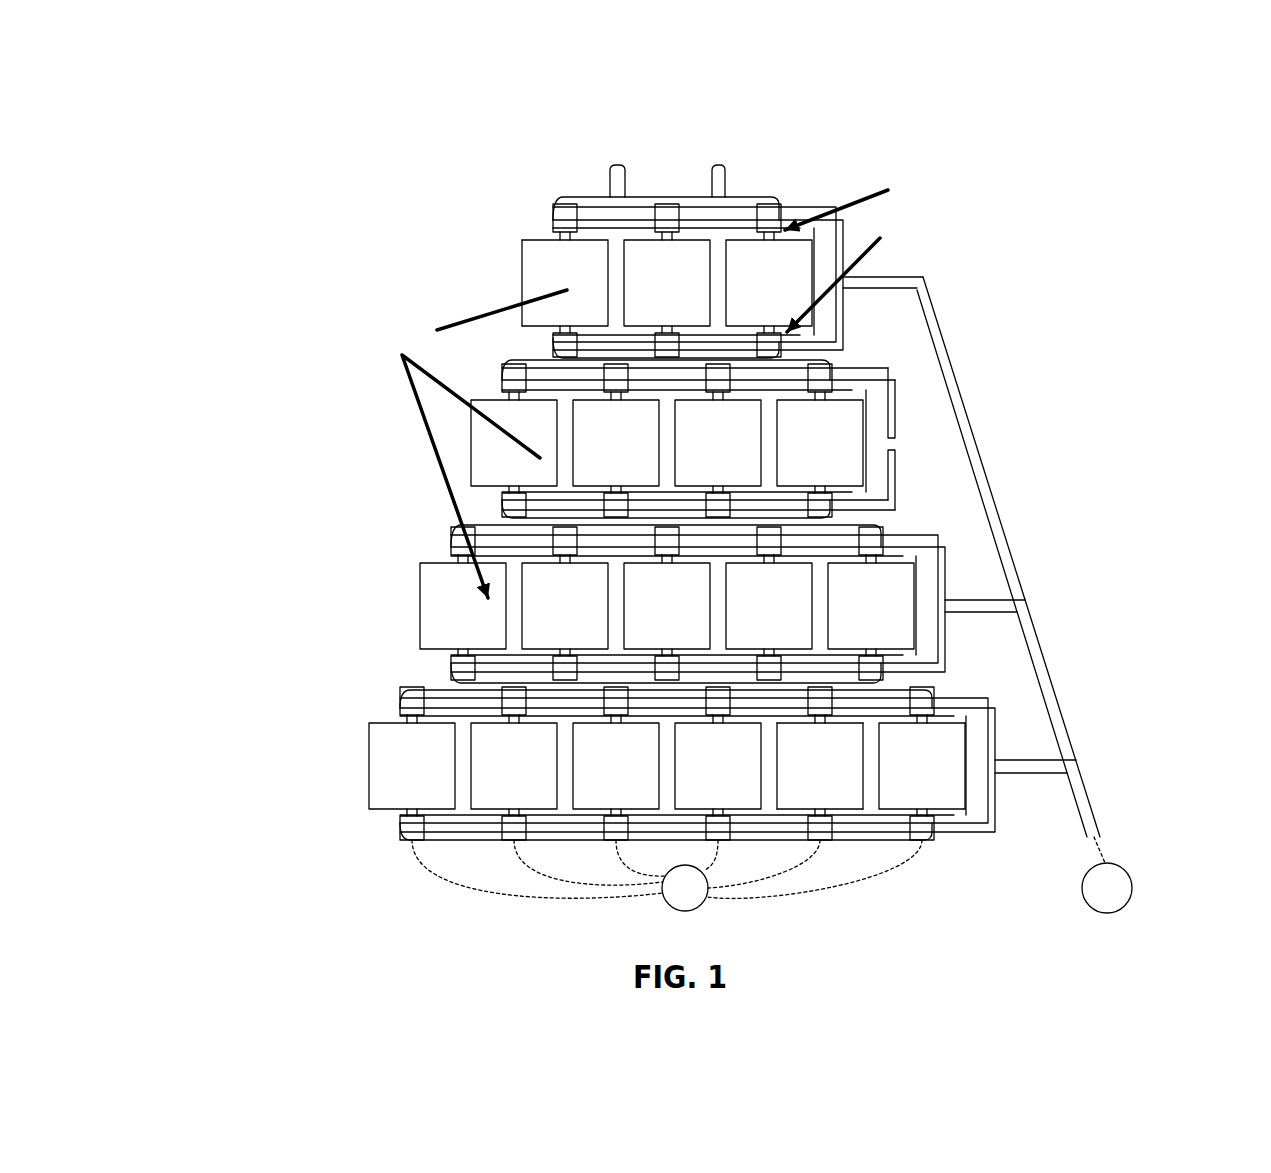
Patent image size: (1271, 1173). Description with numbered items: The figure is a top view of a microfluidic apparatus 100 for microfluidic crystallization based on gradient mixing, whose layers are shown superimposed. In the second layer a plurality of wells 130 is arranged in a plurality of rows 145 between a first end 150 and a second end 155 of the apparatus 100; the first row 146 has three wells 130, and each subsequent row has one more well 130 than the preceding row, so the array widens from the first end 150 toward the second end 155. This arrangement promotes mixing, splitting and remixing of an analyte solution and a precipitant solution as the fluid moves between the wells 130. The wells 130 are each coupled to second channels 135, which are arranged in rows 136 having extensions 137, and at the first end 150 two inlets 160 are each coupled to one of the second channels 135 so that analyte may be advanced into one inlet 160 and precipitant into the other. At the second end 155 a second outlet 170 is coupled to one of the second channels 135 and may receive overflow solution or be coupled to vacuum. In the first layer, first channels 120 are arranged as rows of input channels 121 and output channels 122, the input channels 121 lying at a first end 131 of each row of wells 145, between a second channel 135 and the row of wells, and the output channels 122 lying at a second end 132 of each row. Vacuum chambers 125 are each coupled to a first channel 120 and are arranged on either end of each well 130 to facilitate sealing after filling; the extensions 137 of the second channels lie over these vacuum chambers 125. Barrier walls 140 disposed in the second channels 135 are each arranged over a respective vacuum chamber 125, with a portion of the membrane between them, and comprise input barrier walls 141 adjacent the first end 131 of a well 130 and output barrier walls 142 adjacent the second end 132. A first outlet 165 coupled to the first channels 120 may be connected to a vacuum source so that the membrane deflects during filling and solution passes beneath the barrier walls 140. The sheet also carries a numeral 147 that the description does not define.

The system 100 is at (1037, 134).
The channel 120 is at (1022, 592).
The inlet channel 121 is at (730, 218).
The outlet channel 122 is at (867, 508).
The flow direction 125 is at (867, 244).
The module 130 is at (522, 260).
The module top edge 131 is at (850, 724).
The module bottom edge 132 is at (843, 811).
The manifold 135 is at (963, 658).
The manifold outer channel 136 is at (450, 685).
The connector 137 is at (557, 232).
The end connector 140 is at (768, 223).
The upper loop segment 141 is at (822, 383).
The lower loop segment 142 is at (822, 508).
The flow direction arrow 145 is at (469, 444).
The module side 146 is at (522, 283).
The module side 147 is at (967, 758).
The module array 150 is at (565, 148).
The lower manifold 155 is at (947, 853).
The inlet ports 160 is at (722, 163).
The outlet 165 is at (1130, 875).
The collector 170 is at (668, 903).